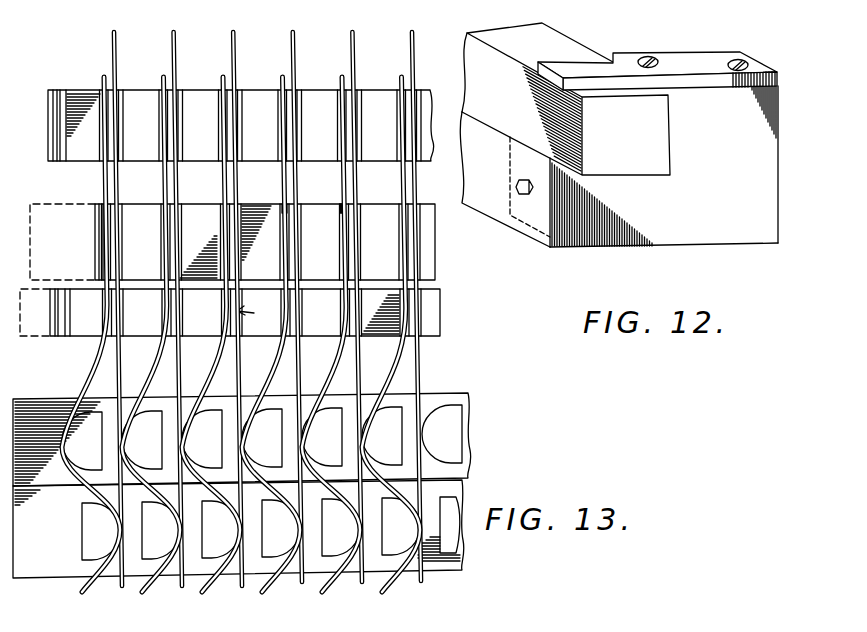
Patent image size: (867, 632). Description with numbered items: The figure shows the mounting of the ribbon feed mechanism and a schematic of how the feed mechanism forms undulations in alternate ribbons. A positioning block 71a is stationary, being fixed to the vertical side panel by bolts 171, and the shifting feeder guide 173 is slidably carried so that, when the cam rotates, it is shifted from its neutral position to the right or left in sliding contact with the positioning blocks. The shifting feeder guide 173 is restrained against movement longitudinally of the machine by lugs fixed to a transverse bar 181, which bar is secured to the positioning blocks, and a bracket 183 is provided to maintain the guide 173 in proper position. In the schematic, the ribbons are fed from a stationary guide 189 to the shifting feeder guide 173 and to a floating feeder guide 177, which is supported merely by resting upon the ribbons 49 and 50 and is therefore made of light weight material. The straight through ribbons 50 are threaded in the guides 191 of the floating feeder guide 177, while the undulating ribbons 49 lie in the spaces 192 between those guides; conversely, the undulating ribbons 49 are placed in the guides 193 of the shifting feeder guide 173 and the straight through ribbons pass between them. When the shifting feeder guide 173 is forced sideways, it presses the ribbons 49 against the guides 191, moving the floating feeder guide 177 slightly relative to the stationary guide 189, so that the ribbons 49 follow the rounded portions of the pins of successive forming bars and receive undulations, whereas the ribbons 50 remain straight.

In FIG. 13, the stationary guide 189 is at (81, 98).
In FIG. 13, the shifting feeder guide 173 is at (99, 233).
In FIG. 12, the shifting feeder guide 173 is at (545, 36).
In FIG. 13, the guides of shifting feeder guide 193 is at (344, 208).
In FIG. 13, the guides of floating feeder guide 191 is at (259, 314).
In FIG. 13, the spaces 192 is at (147, 324).
In FIG. 13, the floating feeder guide 177 is at (438, 308).
In FIG. 13, the straight through ribbons 50 is at (182, 588).
In FIG. 13, the undulating ribbons 49 is at (326, 589).
In FIG. 12, the bracket 183 is at (708, 55).
In FIG. 12, the bolts 171 is at (518, 186).
In FIG. 12, the transverse bar 181 is at (499, 208).
In FIG. 12, the positioning block 71a is at (647, 244).